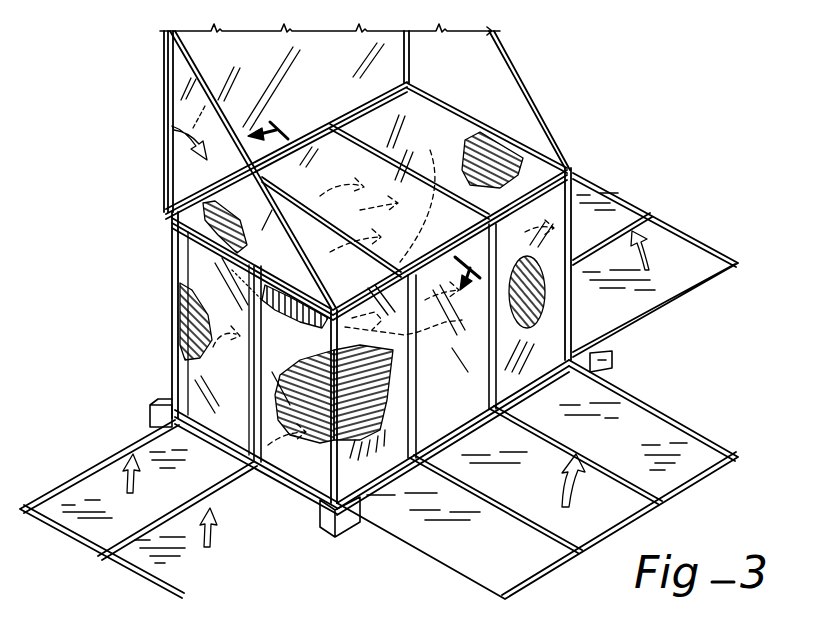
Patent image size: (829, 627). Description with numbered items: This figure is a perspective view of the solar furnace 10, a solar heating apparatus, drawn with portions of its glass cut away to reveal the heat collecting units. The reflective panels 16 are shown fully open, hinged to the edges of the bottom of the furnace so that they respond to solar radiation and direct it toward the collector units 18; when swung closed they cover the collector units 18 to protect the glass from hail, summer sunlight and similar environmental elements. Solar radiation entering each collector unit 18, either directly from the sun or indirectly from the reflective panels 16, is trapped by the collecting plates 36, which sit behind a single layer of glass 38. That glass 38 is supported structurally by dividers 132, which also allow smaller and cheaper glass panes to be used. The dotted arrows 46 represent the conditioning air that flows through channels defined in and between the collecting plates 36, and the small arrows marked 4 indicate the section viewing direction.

The solar furnace 10 is at (576, 100).
The reflective panels 16 is at (176, 97).
The collector units 18 is at (424, 100).
The collecting plates 36 is at (567, 167).
The glass 38 is at (342, 140).
The conditioning air 46 is at (383, 297).
The dividers 132 is at (388, 165).
The section line 4- 4 is at (365, 193).